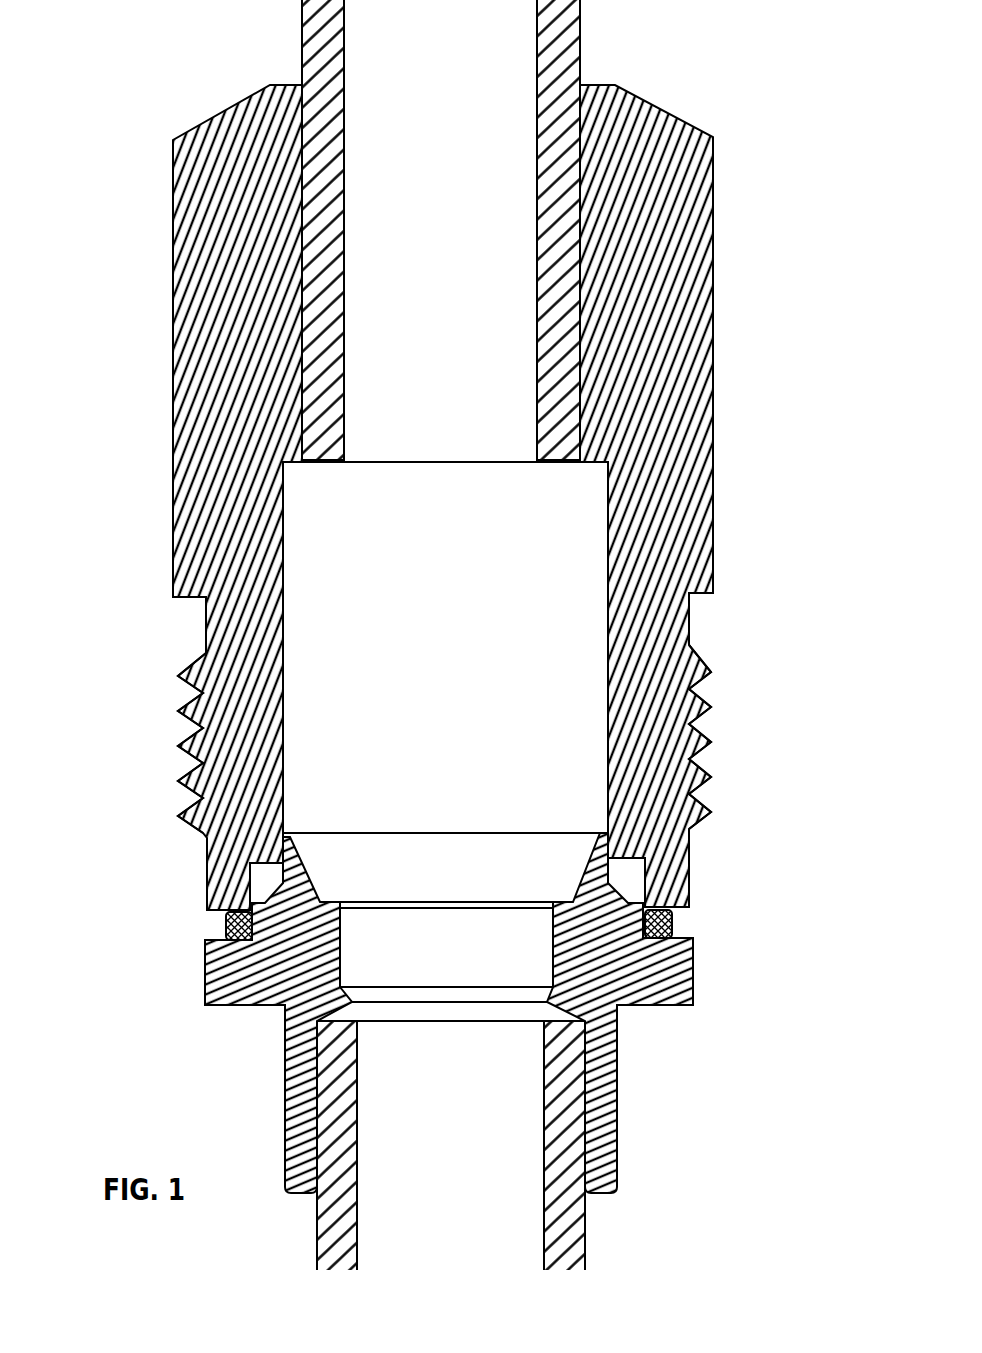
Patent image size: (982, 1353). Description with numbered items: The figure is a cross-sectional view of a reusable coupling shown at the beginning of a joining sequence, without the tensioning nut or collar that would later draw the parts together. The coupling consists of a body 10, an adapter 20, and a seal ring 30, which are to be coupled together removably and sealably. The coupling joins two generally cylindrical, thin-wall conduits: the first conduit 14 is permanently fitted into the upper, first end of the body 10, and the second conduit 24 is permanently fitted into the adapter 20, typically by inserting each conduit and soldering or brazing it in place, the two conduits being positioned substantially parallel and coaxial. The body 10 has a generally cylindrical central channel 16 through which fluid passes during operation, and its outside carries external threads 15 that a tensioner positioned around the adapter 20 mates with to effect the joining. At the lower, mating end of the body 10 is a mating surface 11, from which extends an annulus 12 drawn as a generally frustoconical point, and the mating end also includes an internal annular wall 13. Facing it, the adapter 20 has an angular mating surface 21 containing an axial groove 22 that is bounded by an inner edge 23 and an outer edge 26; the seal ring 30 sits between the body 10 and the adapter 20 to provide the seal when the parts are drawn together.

The body 10 is at (700, 570).
The mating surface 11 is at (688, 907).
The annulus 12 is at (683, 905).
The internal annular wall 13 is at (243, 885).
The first conduit 14 is at (573, 63).
The external threads 15 is at (700, 702).
The central channel 16 is at (460, 657).
The adapter 20 is at (293, 1000).
The mating surface 21 is at (618, 892).
The axial groove 22 is at (692, 976).
The inner edge 23 is at (227, 917).
The second conduit 24 is at (560, 1178).
The outer edge 26 is at (663, 939).
The seal ring 30 is at (673, 927).